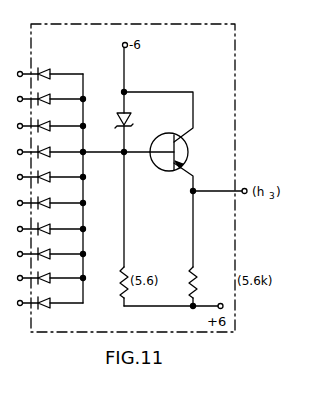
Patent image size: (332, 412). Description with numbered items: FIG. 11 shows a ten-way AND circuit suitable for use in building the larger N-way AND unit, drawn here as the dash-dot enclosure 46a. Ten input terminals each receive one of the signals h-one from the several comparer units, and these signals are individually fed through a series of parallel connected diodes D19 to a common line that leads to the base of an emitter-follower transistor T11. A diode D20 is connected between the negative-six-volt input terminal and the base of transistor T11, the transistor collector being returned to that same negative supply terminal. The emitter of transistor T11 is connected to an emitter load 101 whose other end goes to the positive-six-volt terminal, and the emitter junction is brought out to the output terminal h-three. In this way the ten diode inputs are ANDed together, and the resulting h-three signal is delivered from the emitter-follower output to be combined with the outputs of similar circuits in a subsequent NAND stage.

The resistance element / network block 46a is at (108, 24).
The parallel connected diodes D19 is at (46, 125).
The diode D20 is at (116, 119).
The emitter-follower transistor T11 is at (163, 133).
The emitter load 101 is at (198, 283).